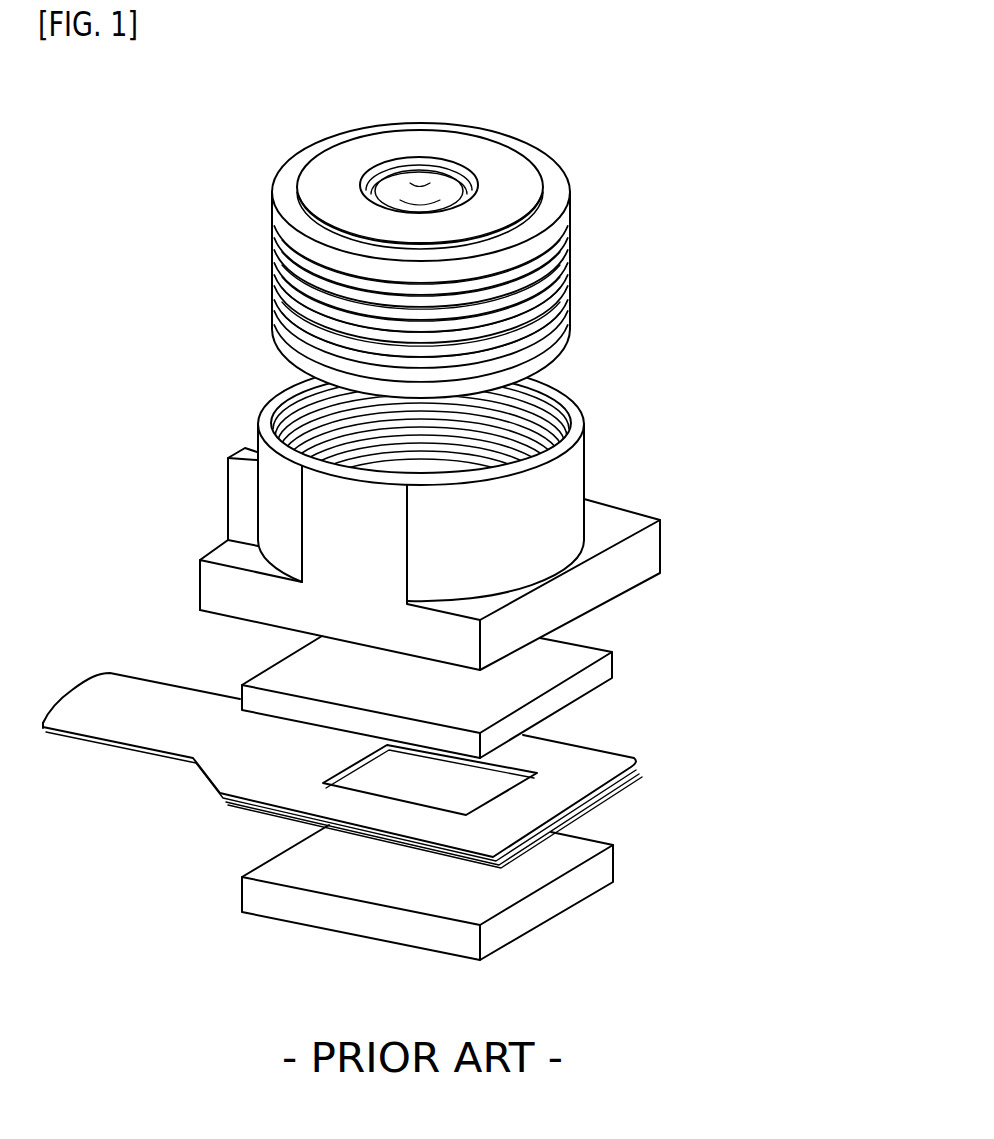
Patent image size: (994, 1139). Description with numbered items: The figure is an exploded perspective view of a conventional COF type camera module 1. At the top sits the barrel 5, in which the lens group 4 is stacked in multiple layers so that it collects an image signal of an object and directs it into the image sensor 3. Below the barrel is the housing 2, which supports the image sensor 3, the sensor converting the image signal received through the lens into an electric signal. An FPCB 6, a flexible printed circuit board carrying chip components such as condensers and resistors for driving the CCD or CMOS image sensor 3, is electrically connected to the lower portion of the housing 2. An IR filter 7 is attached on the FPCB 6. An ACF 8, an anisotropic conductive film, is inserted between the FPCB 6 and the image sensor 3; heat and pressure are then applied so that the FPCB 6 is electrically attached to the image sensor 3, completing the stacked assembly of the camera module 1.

The camera module 1 is at (742, 300).
The housing 2 is at (570, 480).
The image sensor 3 is at (560, 898).
The lens group 4 is at (425, 177).
The barrel 5 is at (552, 252).
The FPCB 6 is at (592, 760).
The IR filter 7 is at (588, 657).
The ACF 8 is at (607, 795).